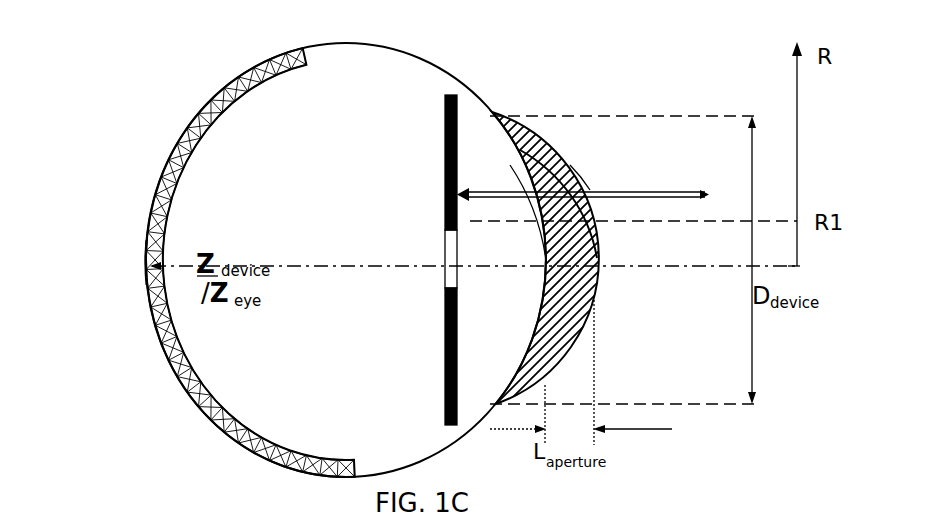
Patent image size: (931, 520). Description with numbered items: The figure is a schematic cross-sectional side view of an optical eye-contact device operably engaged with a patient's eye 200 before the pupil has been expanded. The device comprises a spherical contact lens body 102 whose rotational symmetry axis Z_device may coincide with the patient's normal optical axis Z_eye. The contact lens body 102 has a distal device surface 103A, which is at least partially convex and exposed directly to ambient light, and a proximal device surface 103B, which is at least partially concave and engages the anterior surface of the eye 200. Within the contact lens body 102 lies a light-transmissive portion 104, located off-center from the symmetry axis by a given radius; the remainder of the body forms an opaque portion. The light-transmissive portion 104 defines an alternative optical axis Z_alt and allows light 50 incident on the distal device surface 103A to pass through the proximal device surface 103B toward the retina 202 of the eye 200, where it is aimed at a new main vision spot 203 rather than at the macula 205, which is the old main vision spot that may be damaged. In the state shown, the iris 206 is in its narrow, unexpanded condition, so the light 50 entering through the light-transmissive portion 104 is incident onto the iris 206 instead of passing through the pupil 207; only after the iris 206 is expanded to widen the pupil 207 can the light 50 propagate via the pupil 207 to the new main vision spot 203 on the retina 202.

The patient's eye 200 is at (158, 126).
The retina 202 is at (216, 88).
The new main vision spot 203 is at (150, 190).
The macula 205 is at (148, 268).
The contact lens body 102 is at (522, 107).
The distal device surface 103A is at (548, 125).
The proximal device surface 103B is at (530, 175).
The light-transmissive portion 104 is at (590, 187).
The light 50 is at (707, 198).
The iris 206 is at (432, 349).
The pupil 207 is at (432, 242).